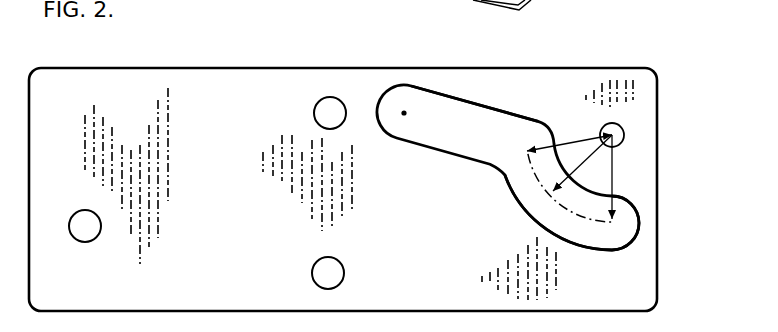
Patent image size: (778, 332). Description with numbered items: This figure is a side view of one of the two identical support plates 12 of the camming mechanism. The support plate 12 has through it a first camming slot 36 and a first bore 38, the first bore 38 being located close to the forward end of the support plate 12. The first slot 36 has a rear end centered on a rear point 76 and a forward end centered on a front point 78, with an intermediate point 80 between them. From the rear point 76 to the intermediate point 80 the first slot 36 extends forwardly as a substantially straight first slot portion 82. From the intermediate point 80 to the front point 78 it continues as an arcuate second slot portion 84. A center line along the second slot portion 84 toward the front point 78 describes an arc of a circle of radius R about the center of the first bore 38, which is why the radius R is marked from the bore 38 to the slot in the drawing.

The support plate 12 is at (205, 140).
The first camming slot 36 is at (514, 107).
The first bore 38 is at (624, 128).
The rear point 76 is at (404, 110).
The front point 78 is at (639, 226).
The intermediate point 80 is at (525, 150).
The first slot portion 82 is at (465, 117).
The second slot portion 84 is at (523, 219).